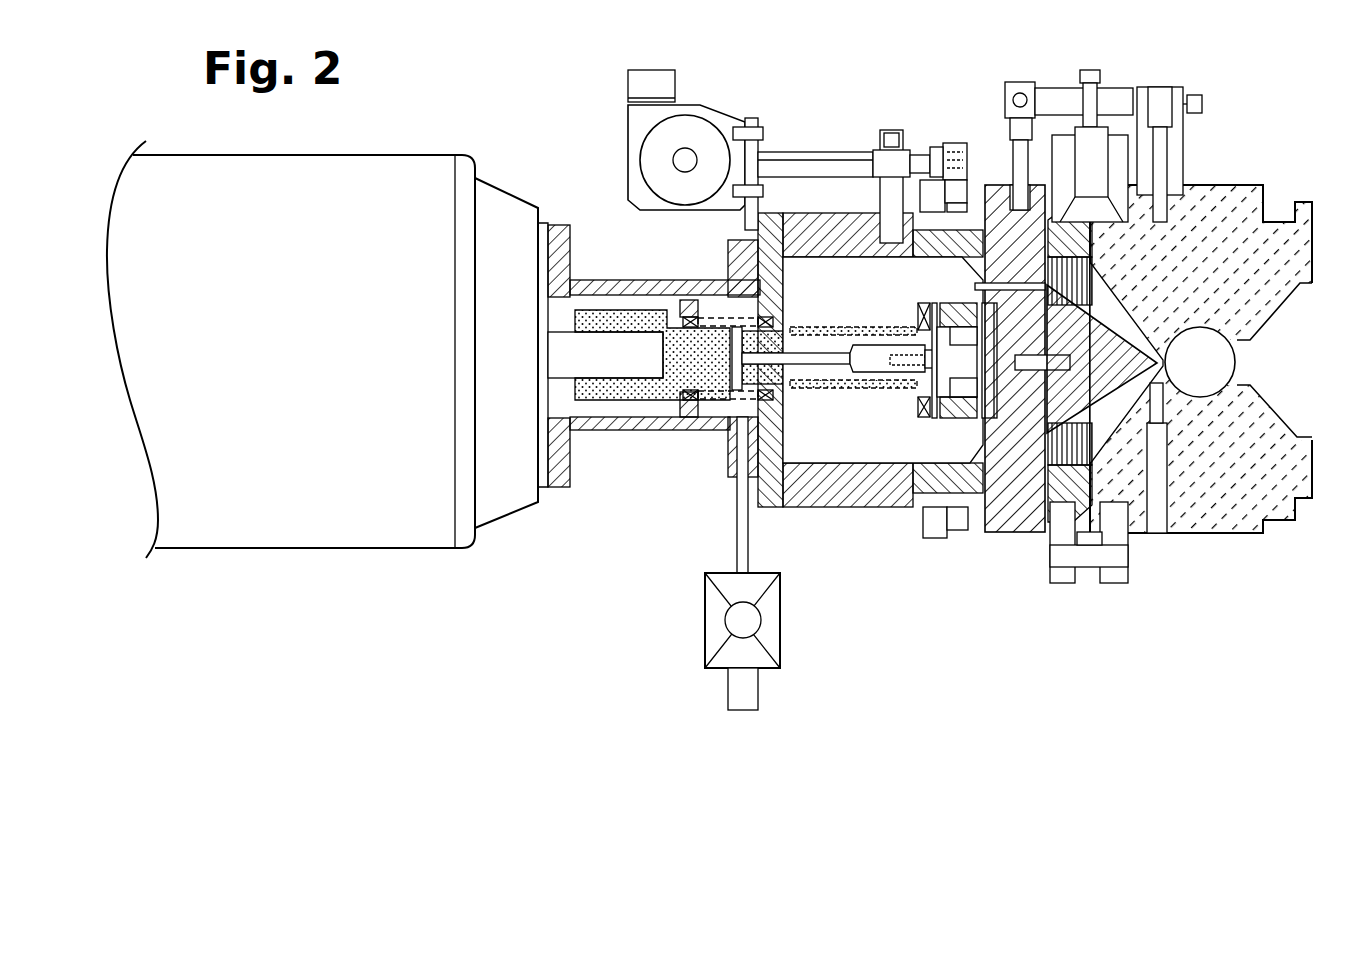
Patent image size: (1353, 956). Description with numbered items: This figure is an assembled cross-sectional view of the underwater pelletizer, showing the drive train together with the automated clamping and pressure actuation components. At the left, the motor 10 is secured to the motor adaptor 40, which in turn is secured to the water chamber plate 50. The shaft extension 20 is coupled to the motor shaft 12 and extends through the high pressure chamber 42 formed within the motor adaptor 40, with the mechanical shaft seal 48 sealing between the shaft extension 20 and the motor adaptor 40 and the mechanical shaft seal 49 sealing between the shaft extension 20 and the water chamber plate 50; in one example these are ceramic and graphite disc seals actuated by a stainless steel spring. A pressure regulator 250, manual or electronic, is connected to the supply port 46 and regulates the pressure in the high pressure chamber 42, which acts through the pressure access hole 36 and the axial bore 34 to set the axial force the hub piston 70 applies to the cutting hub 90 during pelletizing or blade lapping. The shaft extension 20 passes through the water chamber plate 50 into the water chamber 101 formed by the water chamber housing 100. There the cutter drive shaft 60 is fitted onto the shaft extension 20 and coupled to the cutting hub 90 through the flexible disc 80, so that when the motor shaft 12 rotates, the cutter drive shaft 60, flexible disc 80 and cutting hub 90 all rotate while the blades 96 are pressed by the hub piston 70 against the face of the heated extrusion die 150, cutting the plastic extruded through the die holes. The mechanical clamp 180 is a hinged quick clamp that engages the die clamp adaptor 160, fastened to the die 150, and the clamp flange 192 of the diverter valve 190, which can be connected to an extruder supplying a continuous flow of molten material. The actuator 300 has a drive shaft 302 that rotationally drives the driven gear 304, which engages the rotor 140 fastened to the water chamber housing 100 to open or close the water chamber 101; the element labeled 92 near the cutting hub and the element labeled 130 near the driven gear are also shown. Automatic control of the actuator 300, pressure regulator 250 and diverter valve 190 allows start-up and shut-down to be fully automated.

The motor 10 is at (355, 362).
The motor shaft 12 is at (563, 383).
The shaft extension 20 is at (602, 308).
The axial bore 34 is at (838, 388).
The pressure access hole 36 is at (727, 372).
The motor adaptor 40 is at (546, 226).
The high pressure chamber 42 is at (717, 418).
The supply port 46 is at (722, 480).
The mechanical shaft seal 48 is at (688, 316).
The mechanical shaft seal 49 is at (760, 316).
The water chamber plate 50 is at (787, 508).
The cutter drive shaft 60 is at (830, 330).
The hub piston 70 is at (912, 335).
The flexible disc 80 is at (933, 315).
The cutting hub 90 is at (965, 417).
The hub 92 is at (905, 378).
The blades 96 is at (958, 420).
The water chamber housing 100 is at (900, 508).
The water chamber 101 is at (845, 470).
The stop block 130 is at (975, 200).
The rotor 140 is at (948, 540).
The extrusion die 150 is at (1002, 535).
The die clamp adaptor 160 is at (1070, 520).
The mechanical clamp 180 is at (1105, 100).
The diverter valve 190 is at (1258, 185).
The clamp flange 192 is at (1105, 508).
The pressure regulator 250 is at (745, 715).
The actuator 300 is at (712, 105).
The drive shaft 302 is at (830, 152).
The driven gear 304 is at (945, 145).